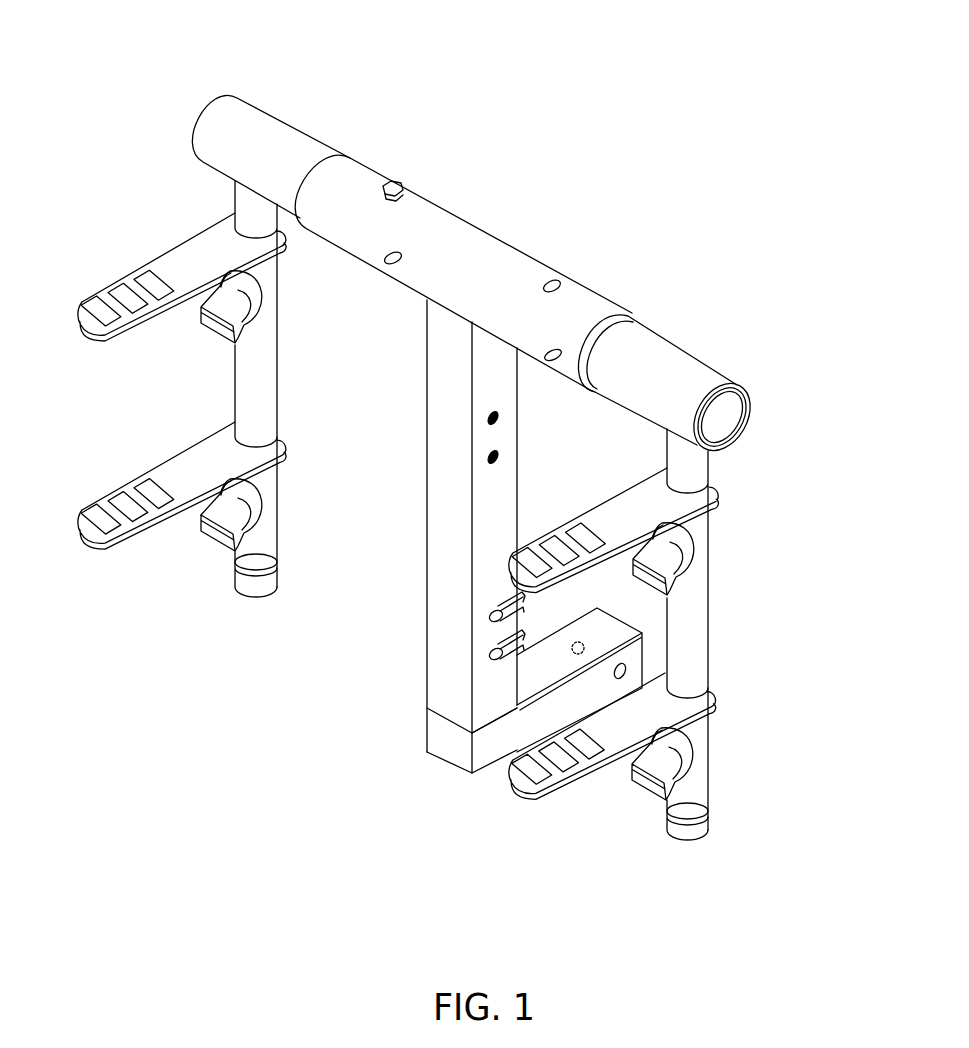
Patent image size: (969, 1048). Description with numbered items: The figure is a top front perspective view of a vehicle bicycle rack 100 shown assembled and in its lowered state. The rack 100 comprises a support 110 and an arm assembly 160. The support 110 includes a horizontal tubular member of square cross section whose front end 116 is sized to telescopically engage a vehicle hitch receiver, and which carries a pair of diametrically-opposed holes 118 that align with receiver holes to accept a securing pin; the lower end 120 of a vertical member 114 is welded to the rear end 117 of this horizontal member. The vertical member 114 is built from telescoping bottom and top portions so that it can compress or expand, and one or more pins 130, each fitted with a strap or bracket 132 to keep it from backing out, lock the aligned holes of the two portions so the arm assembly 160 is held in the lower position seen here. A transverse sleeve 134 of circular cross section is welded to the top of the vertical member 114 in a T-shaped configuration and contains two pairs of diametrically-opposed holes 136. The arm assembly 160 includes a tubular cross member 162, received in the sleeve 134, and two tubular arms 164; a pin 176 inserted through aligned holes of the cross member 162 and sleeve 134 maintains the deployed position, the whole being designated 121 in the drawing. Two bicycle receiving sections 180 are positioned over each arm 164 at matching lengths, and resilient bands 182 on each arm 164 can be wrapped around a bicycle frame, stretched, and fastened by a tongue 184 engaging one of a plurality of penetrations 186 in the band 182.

The vehicle bicycle rack 100 is at (613, 64).
The support 110 is at (418, 470).
The vertical member 114 is at (418, 516).
The front end 116 is at (622, 618).
The rear end 117 is at (418, 743).
The holes 118 is at (575, 641).
The lower end 120 is at (418, 695).
The horizontal cross tube 121 is at (490, 226).
The pin 130 is at (500, 657).
The strap or bracket 132 is at (505, 632).
The transverse sleeve 134 is at (505, 272).
The holes 136 is at (410, 200).
The arm assembly 160 is at (682, 327).
The cross member 162 is at (694, 378).
The arms 164 is at (273, 396).
The pin 176 is at (400, 184).
The bicycle receiving section 180 is at (228, 305).
The resilient band 182 is at (206, 262).
The tongue 184 is at (195, 571).
The penetrations 186 is at (135, 496).